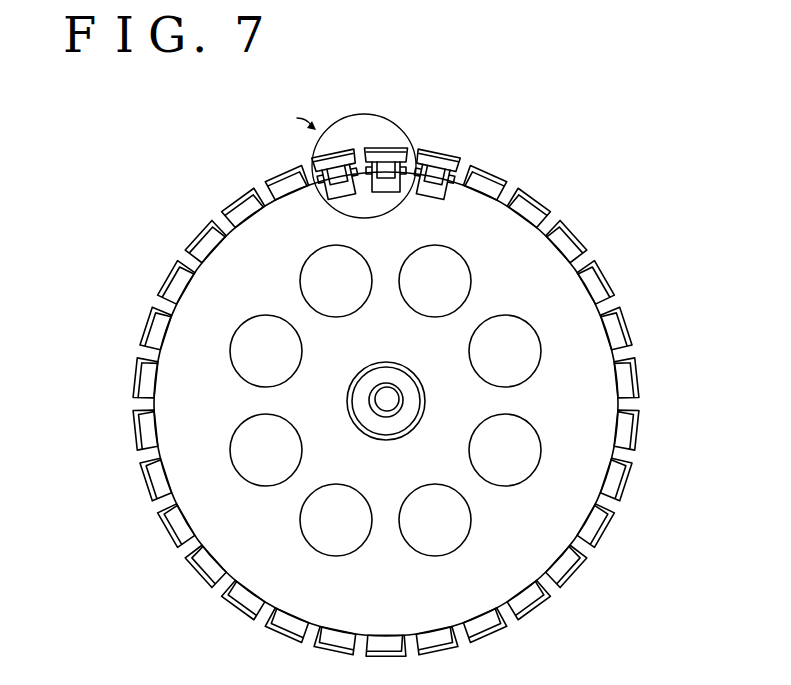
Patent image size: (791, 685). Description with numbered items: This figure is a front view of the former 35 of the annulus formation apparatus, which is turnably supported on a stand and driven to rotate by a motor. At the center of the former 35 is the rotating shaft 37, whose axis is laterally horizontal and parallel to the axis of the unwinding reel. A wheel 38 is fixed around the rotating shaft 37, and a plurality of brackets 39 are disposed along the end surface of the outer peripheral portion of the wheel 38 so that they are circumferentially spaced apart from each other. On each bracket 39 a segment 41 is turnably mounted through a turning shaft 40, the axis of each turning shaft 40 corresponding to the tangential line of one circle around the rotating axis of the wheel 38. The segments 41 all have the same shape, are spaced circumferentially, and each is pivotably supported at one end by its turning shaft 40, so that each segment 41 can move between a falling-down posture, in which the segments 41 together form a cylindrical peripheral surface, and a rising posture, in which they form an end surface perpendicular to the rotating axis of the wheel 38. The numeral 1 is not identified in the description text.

The rotary cutting tool 1 is at (206, 197).
The former 35 is at (612, 263).
The rotating shaft 37 is at (388, 405).
The wheel 38 is at (530, 360).
The bracket 39 is at (492, 182).
The turning shaft 40 is at (444, 188).
The segment 41 is at (434, 161).